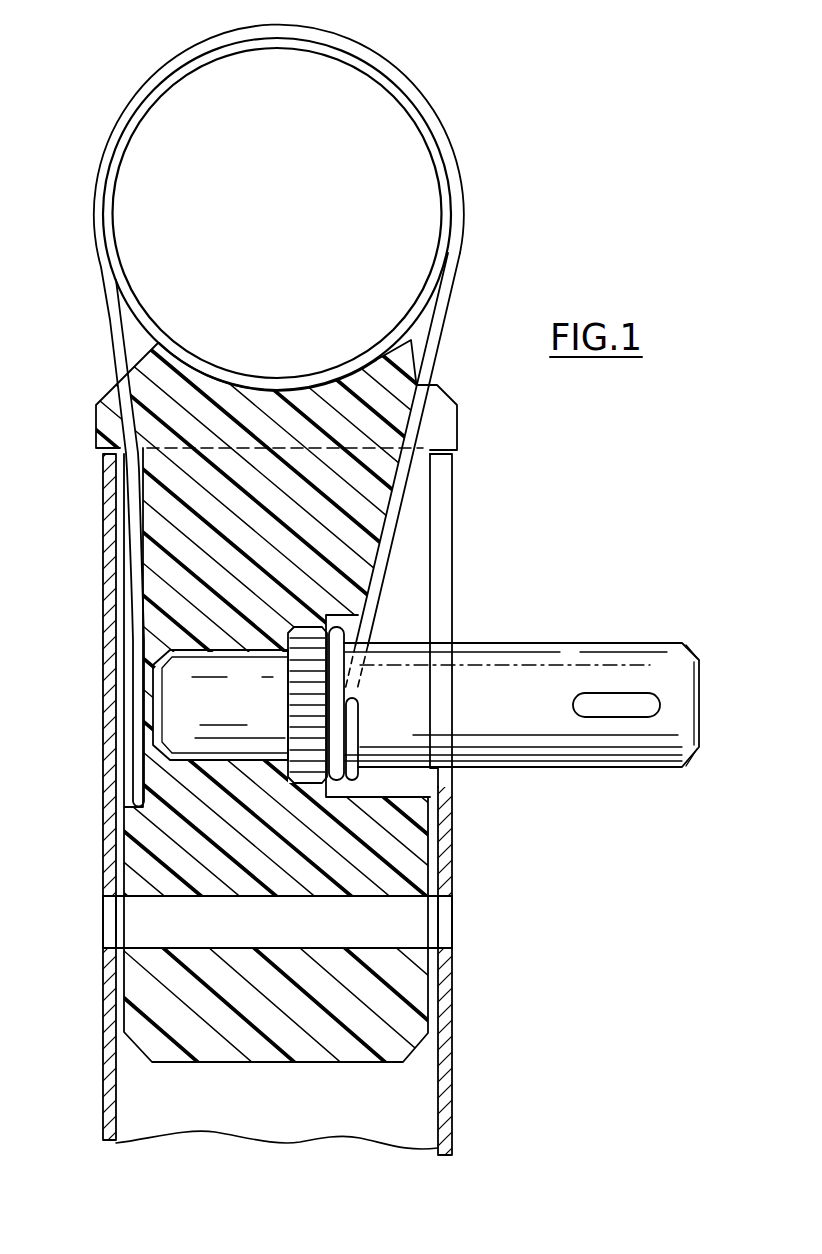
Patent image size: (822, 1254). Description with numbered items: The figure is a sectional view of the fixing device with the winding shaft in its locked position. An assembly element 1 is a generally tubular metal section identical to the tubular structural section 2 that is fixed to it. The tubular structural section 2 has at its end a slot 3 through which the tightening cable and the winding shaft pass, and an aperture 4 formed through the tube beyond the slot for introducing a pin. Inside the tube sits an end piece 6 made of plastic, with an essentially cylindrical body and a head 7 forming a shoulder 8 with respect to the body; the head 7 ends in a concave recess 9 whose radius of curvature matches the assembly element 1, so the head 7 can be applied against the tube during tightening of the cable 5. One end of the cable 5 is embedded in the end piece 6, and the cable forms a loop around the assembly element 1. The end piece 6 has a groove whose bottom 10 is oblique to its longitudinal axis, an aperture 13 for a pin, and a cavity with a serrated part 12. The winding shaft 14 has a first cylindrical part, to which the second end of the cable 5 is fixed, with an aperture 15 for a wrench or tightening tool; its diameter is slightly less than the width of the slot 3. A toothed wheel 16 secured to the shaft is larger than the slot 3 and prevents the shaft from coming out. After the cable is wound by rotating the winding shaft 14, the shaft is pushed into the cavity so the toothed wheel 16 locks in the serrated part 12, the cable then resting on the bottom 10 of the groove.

The assembly element 1 is at (436, 152).
The tubular structural section 2 is at (105, 670).
The slot 3 is at (447, 580).
The aperture 4 is at (105, 940).
The tightening cable 5 is at (456, 248).
The end piece 6 is at (218, 510).
The head 7 is at (172, 407).
The shoulder 8 is at (442, 452).
The concave recess 9 is at (262, 388).
The bottom of the groove 10 is at (386, 548).
The serrated part of the cavity 12 is at (312, 617).
The aperture 13 is at (351, 899).
The winding shaft 14 is at (521, 705).
The aperture 15 is at (623, 708).
The toothed wheel 16 is at (305, 714).